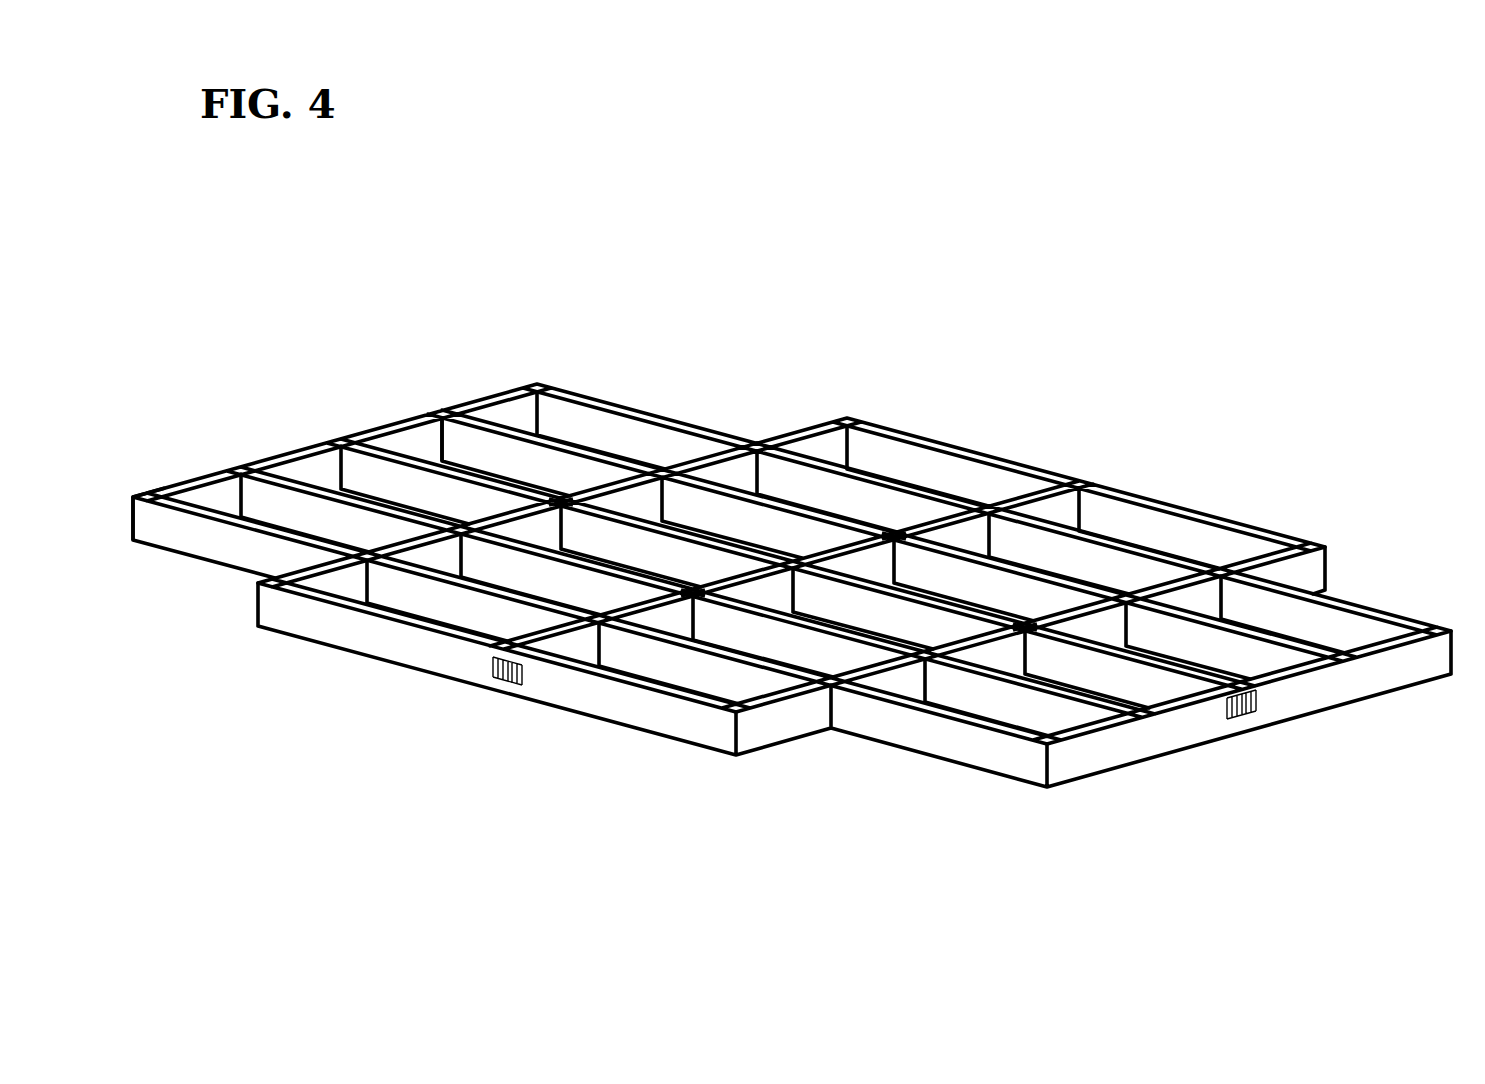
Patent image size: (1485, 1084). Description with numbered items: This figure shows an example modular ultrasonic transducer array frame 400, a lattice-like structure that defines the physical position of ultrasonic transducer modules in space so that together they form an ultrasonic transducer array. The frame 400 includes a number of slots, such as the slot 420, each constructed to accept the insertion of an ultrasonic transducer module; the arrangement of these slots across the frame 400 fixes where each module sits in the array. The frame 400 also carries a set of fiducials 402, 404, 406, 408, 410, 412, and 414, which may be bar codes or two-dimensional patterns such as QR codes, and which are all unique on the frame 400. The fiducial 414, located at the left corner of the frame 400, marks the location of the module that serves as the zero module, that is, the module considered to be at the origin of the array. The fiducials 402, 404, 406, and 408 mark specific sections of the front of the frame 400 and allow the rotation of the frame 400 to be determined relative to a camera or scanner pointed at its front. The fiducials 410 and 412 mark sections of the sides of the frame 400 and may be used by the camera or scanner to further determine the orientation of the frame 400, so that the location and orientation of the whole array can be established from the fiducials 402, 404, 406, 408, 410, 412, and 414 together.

The modular ultrasonic transducer array frame 400 is at (479, 351).
The fiducial 402 is at (568, 507).
The fiducial 404 is at (897, 536).
The fiducial 406 is at (1024, 628).
The fiducial 408 is at (690, 602).
The fiducial 410 is at (494, 686).
The fiducial 412 is at (1240, 722).
The fiducial 414 is at (155, 507).
The slot 420 is at (436, 436).